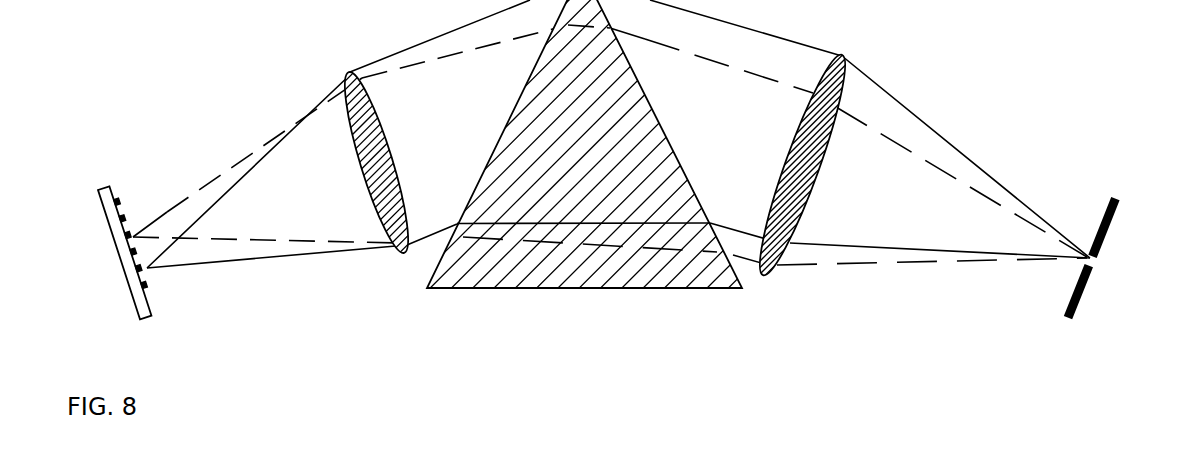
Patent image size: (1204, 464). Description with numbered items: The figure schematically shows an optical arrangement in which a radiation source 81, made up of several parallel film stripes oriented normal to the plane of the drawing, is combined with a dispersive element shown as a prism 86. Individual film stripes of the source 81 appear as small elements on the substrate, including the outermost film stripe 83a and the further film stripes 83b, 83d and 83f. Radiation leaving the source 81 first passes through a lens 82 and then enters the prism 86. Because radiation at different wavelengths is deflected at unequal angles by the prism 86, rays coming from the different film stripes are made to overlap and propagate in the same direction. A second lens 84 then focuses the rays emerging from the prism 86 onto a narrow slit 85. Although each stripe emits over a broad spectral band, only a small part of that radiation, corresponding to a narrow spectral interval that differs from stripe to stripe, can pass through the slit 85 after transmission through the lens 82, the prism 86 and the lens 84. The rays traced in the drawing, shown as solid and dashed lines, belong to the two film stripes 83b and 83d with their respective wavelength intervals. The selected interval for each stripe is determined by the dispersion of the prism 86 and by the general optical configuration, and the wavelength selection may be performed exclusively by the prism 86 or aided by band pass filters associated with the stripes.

The radiation source 81 is at (104, 180).
The lens 82 is at (387, 236).
The film stripe 83a is at (151, 286).
The film stripe 83b is at (141, 271).
The film stripe 83d is at (129, 237).
The film stripe 83f is at (123, 204).
The lens 84 is at (797, 234).
The slit 85 is at (1106, 262).
The prism 86 is at (552, 289).